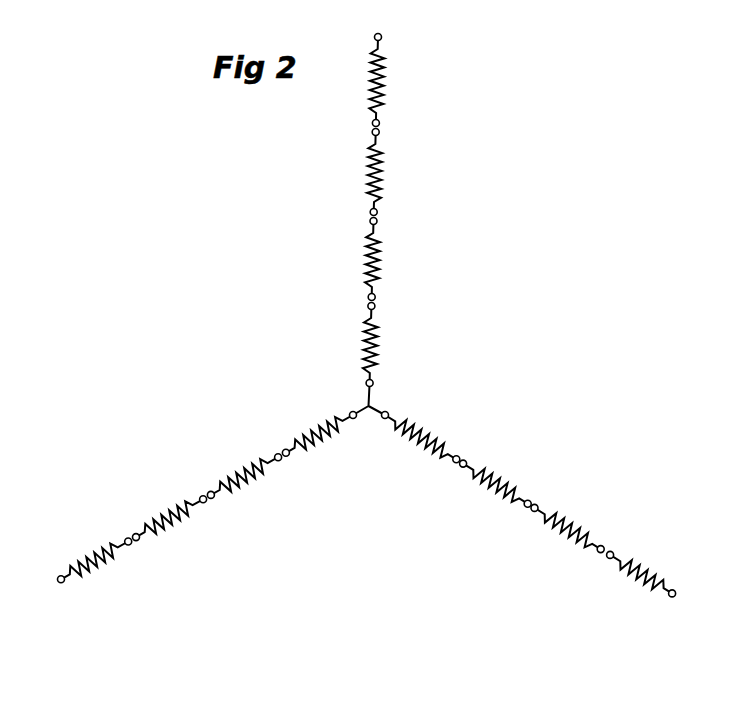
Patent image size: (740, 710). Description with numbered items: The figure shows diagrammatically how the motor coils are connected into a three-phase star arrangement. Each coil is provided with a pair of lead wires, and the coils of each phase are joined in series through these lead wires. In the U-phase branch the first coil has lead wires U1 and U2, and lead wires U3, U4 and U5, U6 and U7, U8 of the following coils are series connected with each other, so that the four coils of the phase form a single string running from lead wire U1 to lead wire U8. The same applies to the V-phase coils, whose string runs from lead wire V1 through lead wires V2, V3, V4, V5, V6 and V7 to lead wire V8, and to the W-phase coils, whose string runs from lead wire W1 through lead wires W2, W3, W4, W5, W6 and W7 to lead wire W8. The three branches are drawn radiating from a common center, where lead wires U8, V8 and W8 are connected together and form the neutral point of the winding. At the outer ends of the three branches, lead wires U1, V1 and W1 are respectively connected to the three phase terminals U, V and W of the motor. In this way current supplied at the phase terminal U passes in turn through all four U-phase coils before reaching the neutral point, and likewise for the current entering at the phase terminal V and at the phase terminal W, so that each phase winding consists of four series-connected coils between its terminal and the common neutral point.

The V-phase terminal V is at (369, 209).
The lead wire V1 is at (392, 42).
The lead wire V2 is at (390, 121).
The lead wire V3 is at (389, 142).
The lead wire V4 is at (389, 205).
The lead wire V5 is at (386, 227).
The lead wire V6 is at (386, 291).
The lead wire V7 is at (385, 315).
The lead wire V8 is at (383, 386).
The U-phase terminal U is at (194, 513).
The lead wire U1 is at (54, 569).
The lead wire U2 is at (116, 534).
The lead wire U3 is at (134, 526).
The lead wire U4 is at (192, 492).
The lead wire U5 is at (211, 482).
The lead wire U6 is at (267, 450).
The lead wire U7 is at (286, 439).
The lead wire U8 is at (351, 405).
The W-phase terminal W is at (540, 514).
The lead wire W1 is at (661, 604).
The lead wire W2 is at (604, 570).
The lead wire W3 is at (589, 558).
The lead wire W4 is at (529, 522).
The lead wire W5 is at (516, 512).
The lead wire W6 is at (459, 477).
The lead wire W7 is at (443, 468).
The lead wire W8 is at (376, 426).